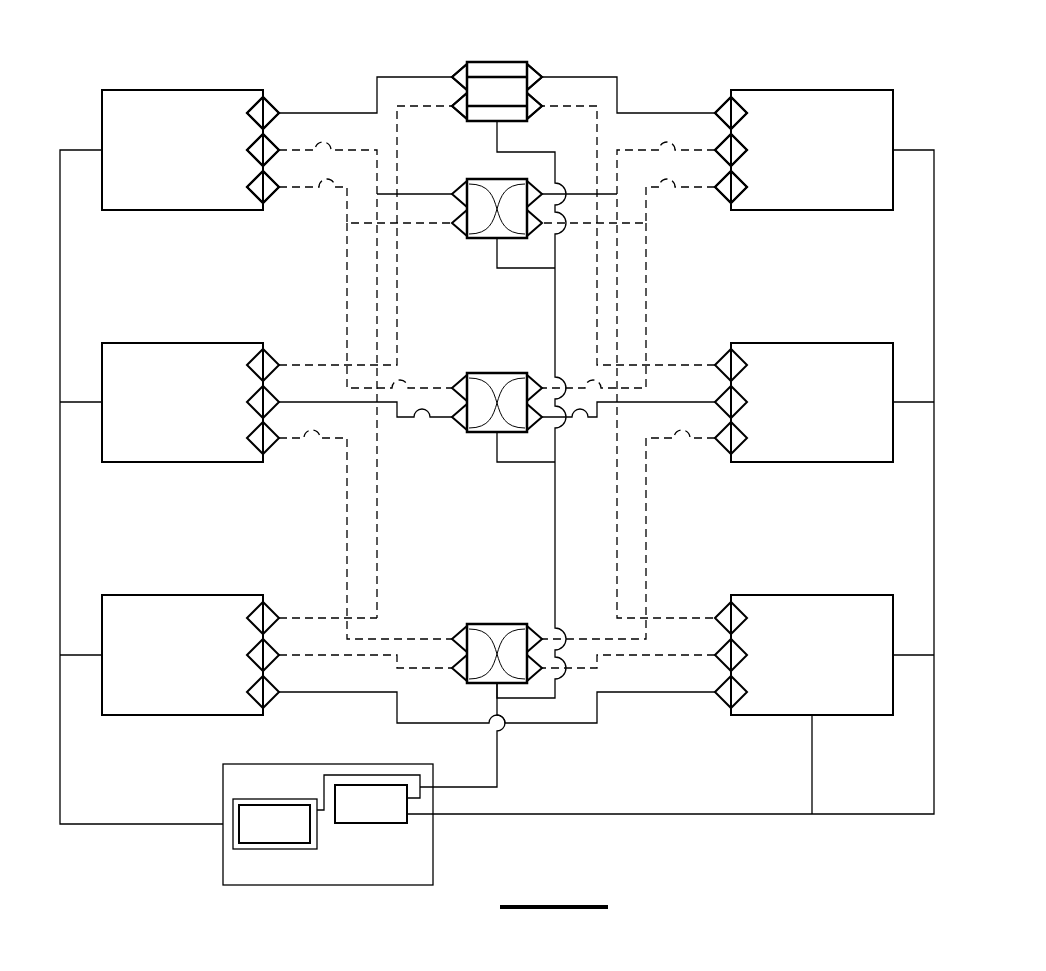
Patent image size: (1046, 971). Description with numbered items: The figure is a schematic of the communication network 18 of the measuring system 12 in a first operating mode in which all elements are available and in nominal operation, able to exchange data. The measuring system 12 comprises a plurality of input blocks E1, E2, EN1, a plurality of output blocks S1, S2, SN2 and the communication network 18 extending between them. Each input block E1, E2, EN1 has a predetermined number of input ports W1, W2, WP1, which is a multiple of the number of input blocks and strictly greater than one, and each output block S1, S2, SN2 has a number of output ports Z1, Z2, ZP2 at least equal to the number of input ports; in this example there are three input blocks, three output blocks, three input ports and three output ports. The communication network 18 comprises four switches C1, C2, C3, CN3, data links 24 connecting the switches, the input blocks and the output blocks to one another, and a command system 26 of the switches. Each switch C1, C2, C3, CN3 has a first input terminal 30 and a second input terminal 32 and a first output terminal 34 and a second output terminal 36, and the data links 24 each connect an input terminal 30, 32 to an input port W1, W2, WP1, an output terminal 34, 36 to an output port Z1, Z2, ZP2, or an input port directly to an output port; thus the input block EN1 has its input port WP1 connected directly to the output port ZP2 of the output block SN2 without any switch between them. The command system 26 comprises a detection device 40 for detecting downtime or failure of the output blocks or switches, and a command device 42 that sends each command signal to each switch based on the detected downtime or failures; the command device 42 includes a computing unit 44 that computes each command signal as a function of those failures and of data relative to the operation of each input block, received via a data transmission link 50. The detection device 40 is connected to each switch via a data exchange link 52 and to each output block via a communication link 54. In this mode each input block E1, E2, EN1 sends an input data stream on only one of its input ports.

The measuring system 12 is at (812, 885).
The communication network 18 is at (650, 62).
The data links 24 is at (290, 440).
The command system 26 is at (305, 853).
The first input terminal 30 is at (462, 64).
The second input terminal 32 is at (455, 105).
The first output terminal 34 is at (531, 65).
The second output terminal 36 is at (540, 106).
The detection device 40 is at (371, 804).
The command device 42 is at (233, 848).
The computing unit 44 is at (274, 824).
The data transmission link 50 is at (101, 825).
The data exchange link 52 is at (497, 769).
The communication link 54 is at (645, 815).
The input block E1 is at (190, 150).
The input block E2 is at (190, 402).
The input block EN1 is at (190, 655).
The output block S1 is at (804, 150).
The output block S2 is at (804, 402).
The output block SN2 is at (804, 655).
The switch C1 is at (476, 122).
The switch C2 is at (476, 239).
The switch C3 is at (474, 433).
The switch CN3 is at (475, 684).
The input port W1 is at (268, 106).
The input port W2 is at (268, 144).
The input port WP1 is at (268, 196).
The output port Z1 is at (727, 106).
The output port Z2 is at (727, 144).
The output port ZP2 is at (727, 197).